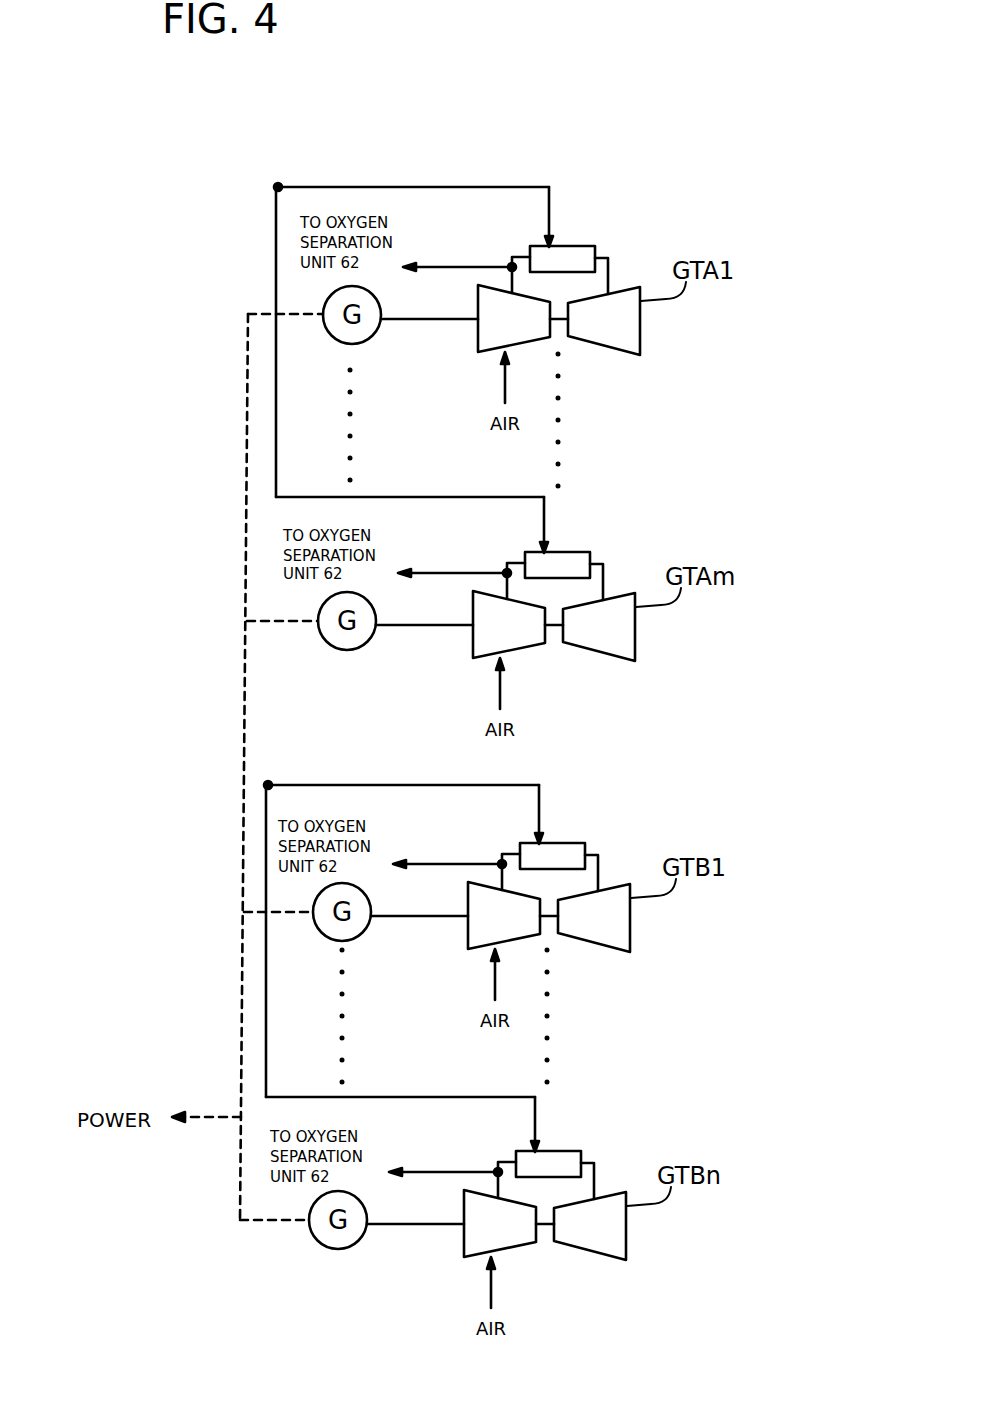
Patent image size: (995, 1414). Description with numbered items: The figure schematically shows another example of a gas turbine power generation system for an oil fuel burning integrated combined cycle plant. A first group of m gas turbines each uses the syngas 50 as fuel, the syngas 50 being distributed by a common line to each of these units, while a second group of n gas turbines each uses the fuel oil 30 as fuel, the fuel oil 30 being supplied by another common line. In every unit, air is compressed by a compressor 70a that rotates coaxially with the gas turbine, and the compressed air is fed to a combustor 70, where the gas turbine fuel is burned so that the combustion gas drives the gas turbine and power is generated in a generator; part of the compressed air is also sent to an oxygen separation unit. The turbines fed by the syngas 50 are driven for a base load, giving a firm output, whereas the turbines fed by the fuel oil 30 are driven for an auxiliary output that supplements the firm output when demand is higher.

The syngas 50 is at (276, 187).
The fuel oil 30 is at (266, 785).
The combustor 70 is at (596, 247).
The compressor 70a is at (475, 658).